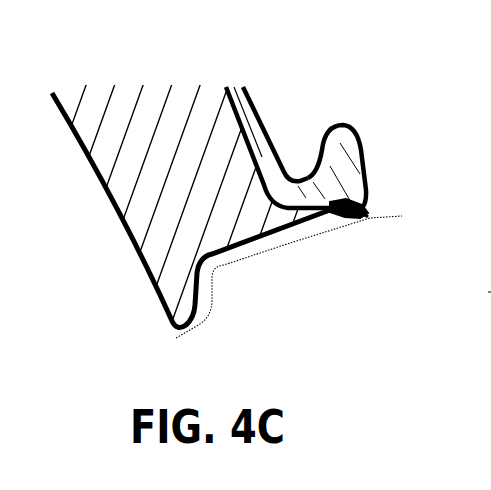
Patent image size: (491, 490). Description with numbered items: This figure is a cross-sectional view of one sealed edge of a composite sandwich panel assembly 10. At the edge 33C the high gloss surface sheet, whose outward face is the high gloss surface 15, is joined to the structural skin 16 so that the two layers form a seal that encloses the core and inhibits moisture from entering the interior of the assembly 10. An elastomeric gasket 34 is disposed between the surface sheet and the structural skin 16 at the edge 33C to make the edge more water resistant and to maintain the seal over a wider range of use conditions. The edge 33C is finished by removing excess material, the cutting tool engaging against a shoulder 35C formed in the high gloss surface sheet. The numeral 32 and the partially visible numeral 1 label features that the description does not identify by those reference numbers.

The composite sandwich panel assembly 10 is at (277, 268).
The high gloss surface 15 is at (268, 135).
The structural skin 16 is at (108, 194).
The contact region 32 is at (366, 215).
The edge 33C is at (360, 213).
The elastomeric gasket 34 is at (352, 204).
The shoulder 35C is at (366, 211).
The partial reference numeral (cut off) 1 is at (487, 300).